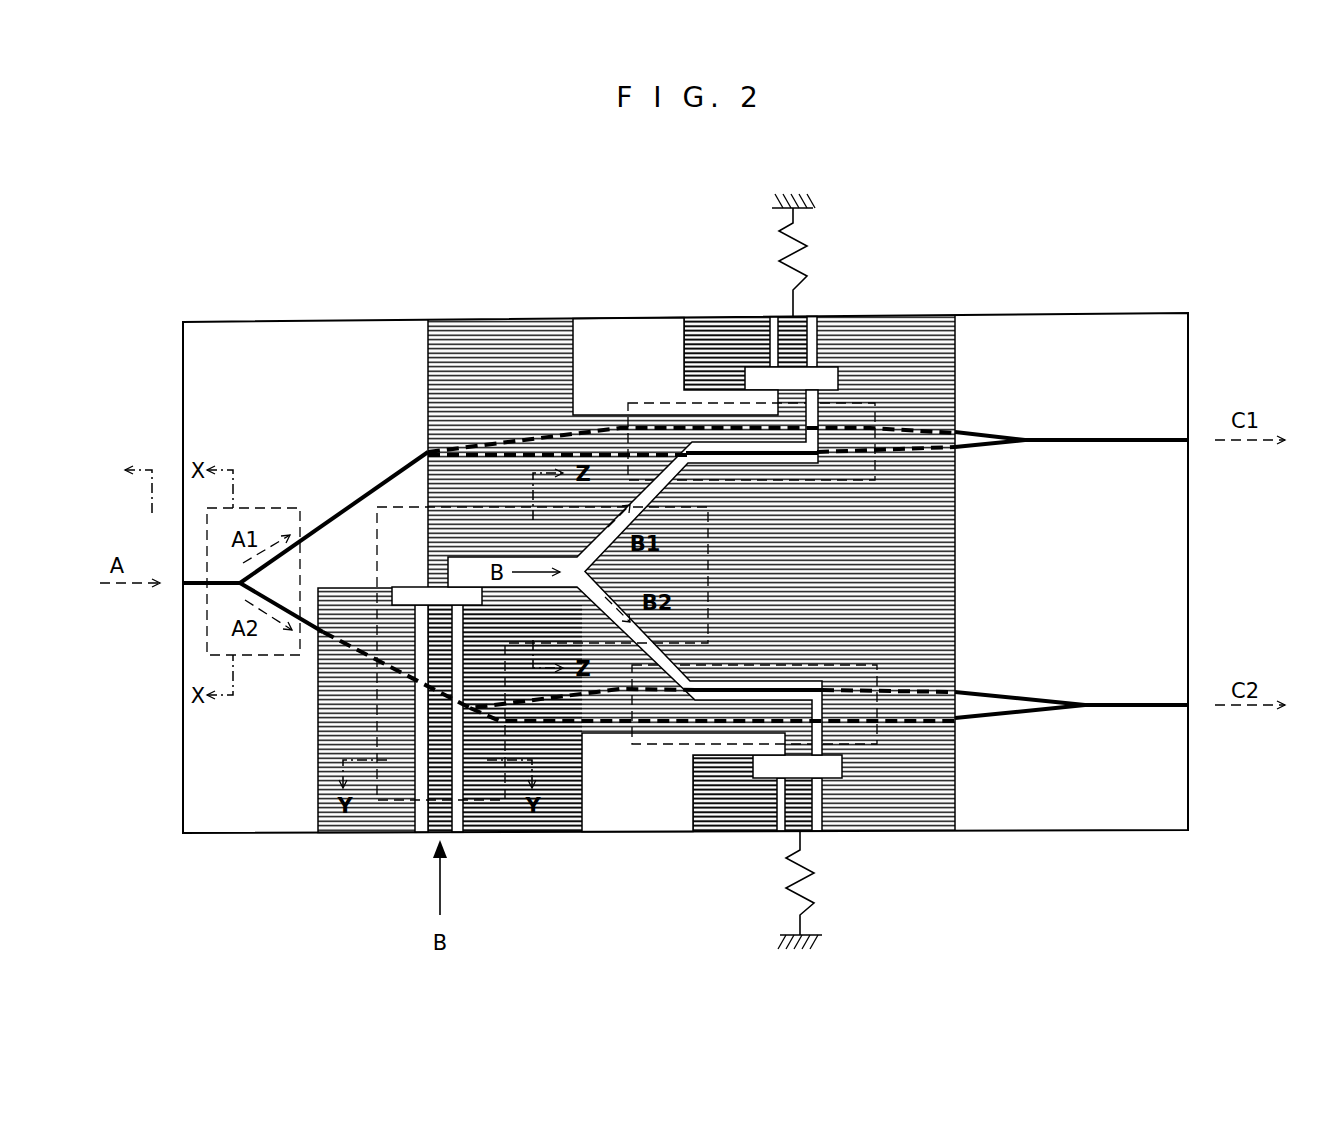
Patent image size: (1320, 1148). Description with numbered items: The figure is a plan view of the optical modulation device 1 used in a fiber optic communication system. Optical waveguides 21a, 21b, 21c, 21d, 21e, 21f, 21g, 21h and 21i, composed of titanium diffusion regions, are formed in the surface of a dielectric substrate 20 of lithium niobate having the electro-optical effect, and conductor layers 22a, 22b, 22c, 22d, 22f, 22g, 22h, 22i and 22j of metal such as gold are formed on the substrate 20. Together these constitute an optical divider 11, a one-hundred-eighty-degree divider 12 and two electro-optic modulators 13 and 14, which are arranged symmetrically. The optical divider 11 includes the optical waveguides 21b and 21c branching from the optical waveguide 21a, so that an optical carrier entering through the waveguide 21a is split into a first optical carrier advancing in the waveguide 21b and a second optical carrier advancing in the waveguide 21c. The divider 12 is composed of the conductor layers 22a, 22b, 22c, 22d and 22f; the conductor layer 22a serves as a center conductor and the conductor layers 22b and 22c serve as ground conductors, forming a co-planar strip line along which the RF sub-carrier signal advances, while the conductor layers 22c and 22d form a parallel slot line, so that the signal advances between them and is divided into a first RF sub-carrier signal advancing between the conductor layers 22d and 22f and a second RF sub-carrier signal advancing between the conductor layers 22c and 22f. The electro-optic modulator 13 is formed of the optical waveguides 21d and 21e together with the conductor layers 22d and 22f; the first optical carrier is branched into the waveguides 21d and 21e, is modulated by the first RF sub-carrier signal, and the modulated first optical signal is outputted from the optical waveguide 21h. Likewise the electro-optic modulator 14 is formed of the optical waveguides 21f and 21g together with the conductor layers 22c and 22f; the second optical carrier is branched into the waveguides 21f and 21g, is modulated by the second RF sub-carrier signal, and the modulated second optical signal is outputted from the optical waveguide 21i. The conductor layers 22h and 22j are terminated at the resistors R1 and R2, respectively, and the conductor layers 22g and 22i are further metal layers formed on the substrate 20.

The optical modulation device 1 is at (245, 234).
The optical divider 11 is at (250, 508).
The 180° divider 12 is at (380, 582).
The electro-optic modulator 13 is at (665, 403).
The electro-optic modulator 14 is at (660, 746).
The dielectric substrate 20 is at (1080, 325).
The optical waveguide 21a is at (190, 590).
The optical waveguide 21b is at (383, 483).
The optical waveguide 21c is at (320, 635).
The optical waveguide 21d is at (878, 430).
The optical waveguide 21e is at (878, 455).
The optical waveguide 21f is at (880, 690).
The optical waveguide 21g is at (888, 722).
The optical waveguide 21h is at (1120, 440).
The optical waveguide 21i is at (1120, 705).
The conductor layer 22a is at (445, 834).
The conductor layer 22b is at (365, 834).
The conductor layer 22c is at (535, 834).
The conductor layer 22d is at (500, 326).
The conductor layer 22f is at (957, 612).
The conductor layer 22g is at (735, 325).
The conductor layer 22h is at (800, 320).
The conductor layer 22i is at (740, 834).
The conductor layer 22j is at (812, 834).
The resistor R1 is at (805, 268).
The resistor R2 is at (815, 880).